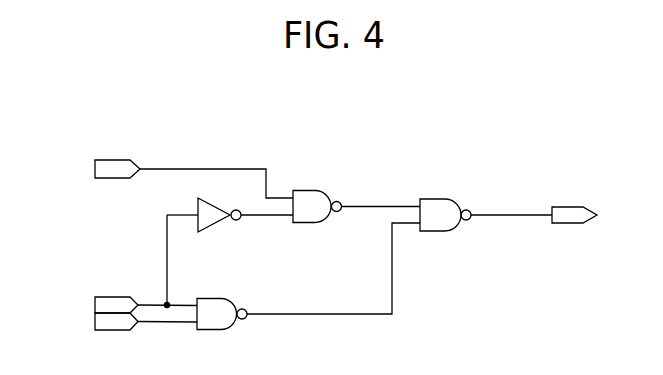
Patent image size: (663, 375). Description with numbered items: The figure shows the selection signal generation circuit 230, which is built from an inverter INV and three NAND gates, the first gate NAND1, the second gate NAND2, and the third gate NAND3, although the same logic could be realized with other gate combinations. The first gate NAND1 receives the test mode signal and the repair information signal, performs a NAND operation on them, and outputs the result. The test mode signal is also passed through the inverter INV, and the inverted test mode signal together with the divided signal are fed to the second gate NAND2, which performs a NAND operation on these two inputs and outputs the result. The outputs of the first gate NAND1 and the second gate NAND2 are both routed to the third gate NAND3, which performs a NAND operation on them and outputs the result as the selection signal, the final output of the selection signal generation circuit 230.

The selection signal generation circuit 230 is at (531, 140).
The inverter INV is at (230, 228).
The first gate NAND1 is at (303, 291).
The second gate NAND2 is at (351, 225).
The third gate NAND3 is at (481, 229).